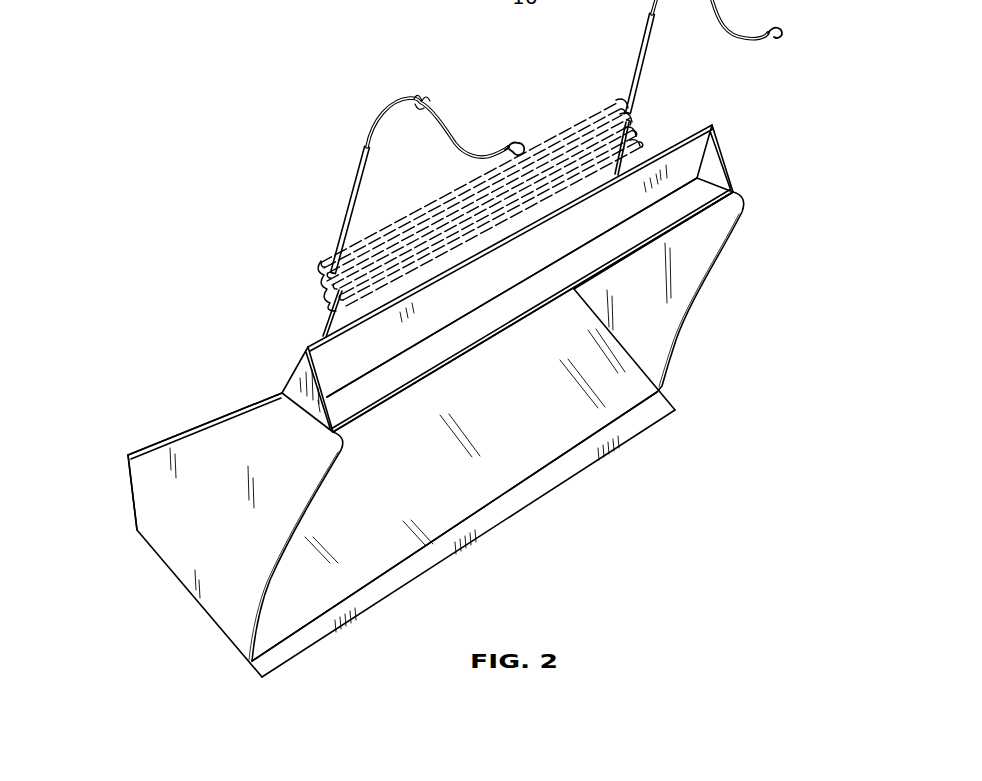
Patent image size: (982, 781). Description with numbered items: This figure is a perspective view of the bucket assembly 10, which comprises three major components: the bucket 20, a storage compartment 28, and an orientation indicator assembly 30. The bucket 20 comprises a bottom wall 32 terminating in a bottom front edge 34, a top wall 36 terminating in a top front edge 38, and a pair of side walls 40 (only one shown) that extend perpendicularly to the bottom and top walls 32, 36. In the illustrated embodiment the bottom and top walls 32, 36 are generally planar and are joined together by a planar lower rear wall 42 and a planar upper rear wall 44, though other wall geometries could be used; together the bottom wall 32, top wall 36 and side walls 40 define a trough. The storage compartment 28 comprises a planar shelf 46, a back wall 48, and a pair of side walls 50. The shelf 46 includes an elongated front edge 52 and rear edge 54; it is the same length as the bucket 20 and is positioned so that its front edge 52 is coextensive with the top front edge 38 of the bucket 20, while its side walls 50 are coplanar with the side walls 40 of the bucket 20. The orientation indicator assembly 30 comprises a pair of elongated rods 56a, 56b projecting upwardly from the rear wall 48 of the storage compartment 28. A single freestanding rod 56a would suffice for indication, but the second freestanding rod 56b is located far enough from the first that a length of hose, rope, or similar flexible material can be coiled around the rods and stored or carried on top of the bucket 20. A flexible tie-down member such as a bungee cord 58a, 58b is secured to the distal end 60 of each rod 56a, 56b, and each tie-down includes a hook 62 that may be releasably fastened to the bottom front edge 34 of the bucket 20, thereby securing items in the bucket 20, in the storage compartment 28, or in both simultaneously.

The bucket assembly 10 is at (220, 172).
The bucket 20 is at (426, 338).
The storage compartment 28 is at (695, 200).
The orientation indicator assembly 30 is at (538, 168).
The bottom wall 32 is at (454, 495).
The bottom front edge 34 is at (530, 493).
The top wall 36 is at (320, 430).
The top front edge 38 is at (397, 398).
The side walls 40 is at (205, 535).
The lower rear wall 42 is at (131, 492).
The upper rear wall 44 is at (200, 422).
The shelf 46 is at (530, 305).
The back wall 48 is at (510, 261).
The side walls 50 is at (303, 373).
The front edge 52 is at (618, 263).
The rear edge 54 is at (627, 220).
The first rod 56a is at (353, 193).
The second rod 56b is at (640, 55).
The bungee cord 58a is at (437, 107).
The bungee cord 58b is at (733, 24).
The distal end 60 is at (405, 198).
The hook 62 is at (512, 143).